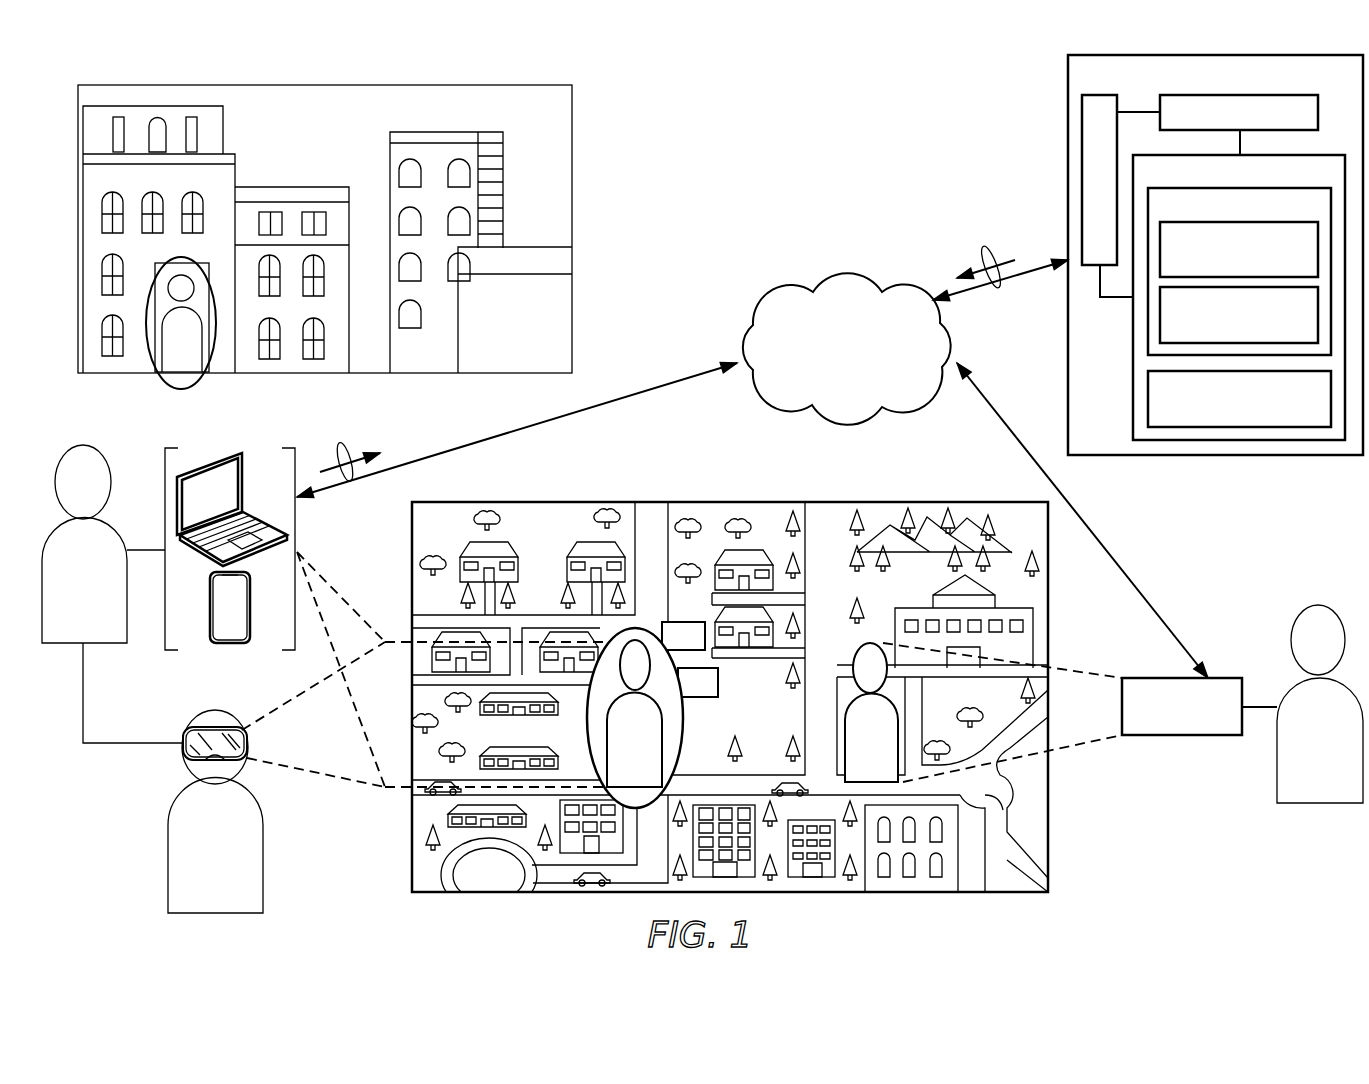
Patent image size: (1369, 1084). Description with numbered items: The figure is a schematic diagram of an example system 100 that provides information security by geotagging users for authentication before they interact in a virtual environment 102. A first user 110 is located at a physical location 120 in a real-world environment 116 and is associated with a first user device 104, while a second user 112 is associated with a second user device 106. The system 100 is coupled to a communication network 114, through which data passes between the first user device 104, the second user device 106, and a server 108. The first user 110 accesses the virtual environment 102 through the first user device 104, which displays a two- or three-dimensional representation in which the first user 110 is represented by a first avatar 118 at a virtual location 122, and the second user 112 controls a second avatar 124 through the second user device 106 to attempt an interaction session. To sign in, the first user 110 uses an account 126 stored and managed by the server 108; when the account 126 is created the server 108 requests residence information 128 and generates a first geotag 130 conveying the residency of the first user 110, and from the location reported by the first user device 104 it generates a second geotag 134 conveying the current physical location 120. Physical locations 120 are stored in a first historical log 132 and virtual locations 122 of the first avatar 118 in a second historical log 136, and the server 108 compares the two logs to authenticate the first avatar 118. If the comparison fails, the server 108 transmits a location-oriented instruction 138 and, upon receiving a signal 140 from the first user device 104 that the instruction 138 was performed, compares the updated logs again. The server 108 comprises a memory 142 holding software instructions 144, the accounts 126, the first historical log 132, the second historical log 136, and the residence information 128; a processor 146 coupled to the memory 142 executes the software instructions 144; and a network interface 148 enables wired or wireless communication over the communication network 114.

The system 100 is at (828, 118).
The virtual environment 102 is at (770, 707).
The first user device 104 is at (243, 586).
The second user device 106 is at (1166, 729).
The server 108 is at (1260, 82).
The first user 110 is at (166, 355).
The second user 112 is at (1302, 761).
The communication network 114 is at (830, 382).
The real-world environment 116 is at (548, 145).
The first avatar 118 is at (619, 754).
The physical location 120 is at (163, 380).
The virtual location 122 is at (587, 724).
The second avatar 124 is at (854, 749).
The account 126 is at (1304, 215).
The residence information 128 is at (338, 448).
The first geotag 130 is at (667, 647).
The first historical log 132 is at (1273, 271).
The second geotag 134 is at (682, 693).
The second historical log 136 is at (1273, 338).
The instruction 138 is at (982, 250).
The signal 140 is at (517, 429).
The memory 142 is at (1292, 180).
The software instructions 144 is at (1308, 421).
The processor 146 is at (1299, 122).
The network interface 148 is at (1082, 125).